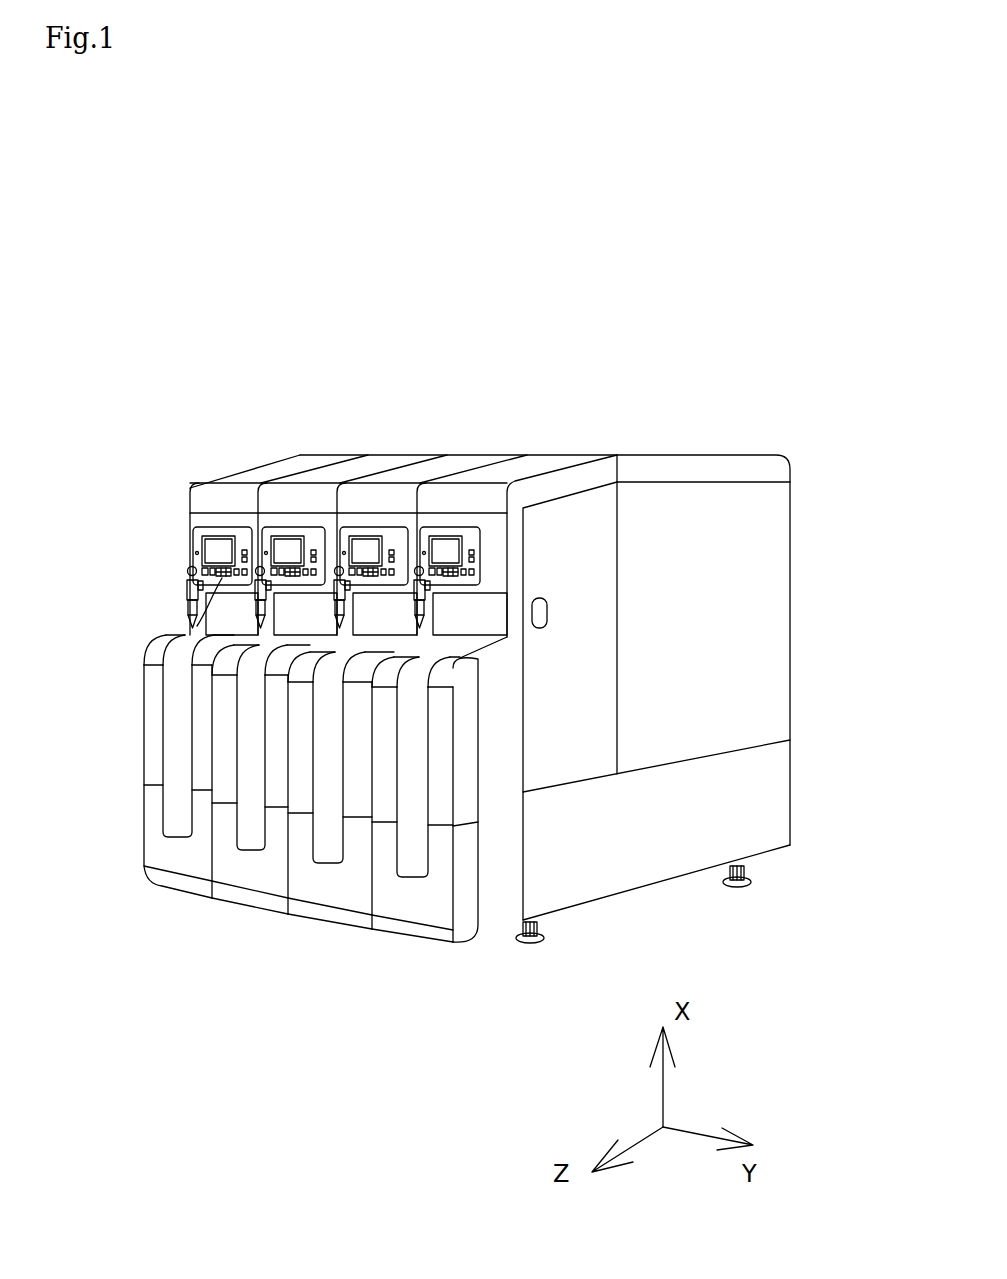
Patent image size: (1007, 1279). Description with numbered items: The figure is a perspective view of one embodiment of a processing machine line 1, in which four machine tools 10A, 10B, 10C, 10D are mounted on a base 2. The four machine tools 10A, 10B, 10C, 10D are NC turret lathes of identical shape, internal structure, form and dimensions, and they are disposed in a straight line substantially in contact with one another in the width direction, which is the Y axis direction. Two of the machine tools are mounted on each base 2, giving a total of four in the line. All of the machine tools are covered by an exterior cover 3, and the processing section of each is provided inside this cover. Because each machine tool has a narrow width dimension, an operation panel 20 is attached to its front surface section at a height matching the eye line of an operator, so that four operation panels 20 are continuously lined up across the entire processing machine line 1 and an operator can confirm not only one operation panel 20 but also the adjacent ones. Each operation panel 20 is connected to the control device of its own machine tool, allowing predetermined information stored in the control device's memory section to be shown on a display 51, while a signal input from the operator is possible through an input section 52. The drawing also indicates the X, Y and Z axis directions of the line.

The processing machine line 1 is at (449, 287).
The machine tool 10A is at (294, 460).
The machine tool 10B is at (384, 460).
The machine tool 10C is at (468, 460).
The machine tool 10D is at (565, 460).
The operation panel 20 is at (203, 527).
The display 51 is at (218, 550).
The input section 52 is at (193, 622).
The exterior cover 3 is at (738, 687).
The base 2 is at (665, 860).